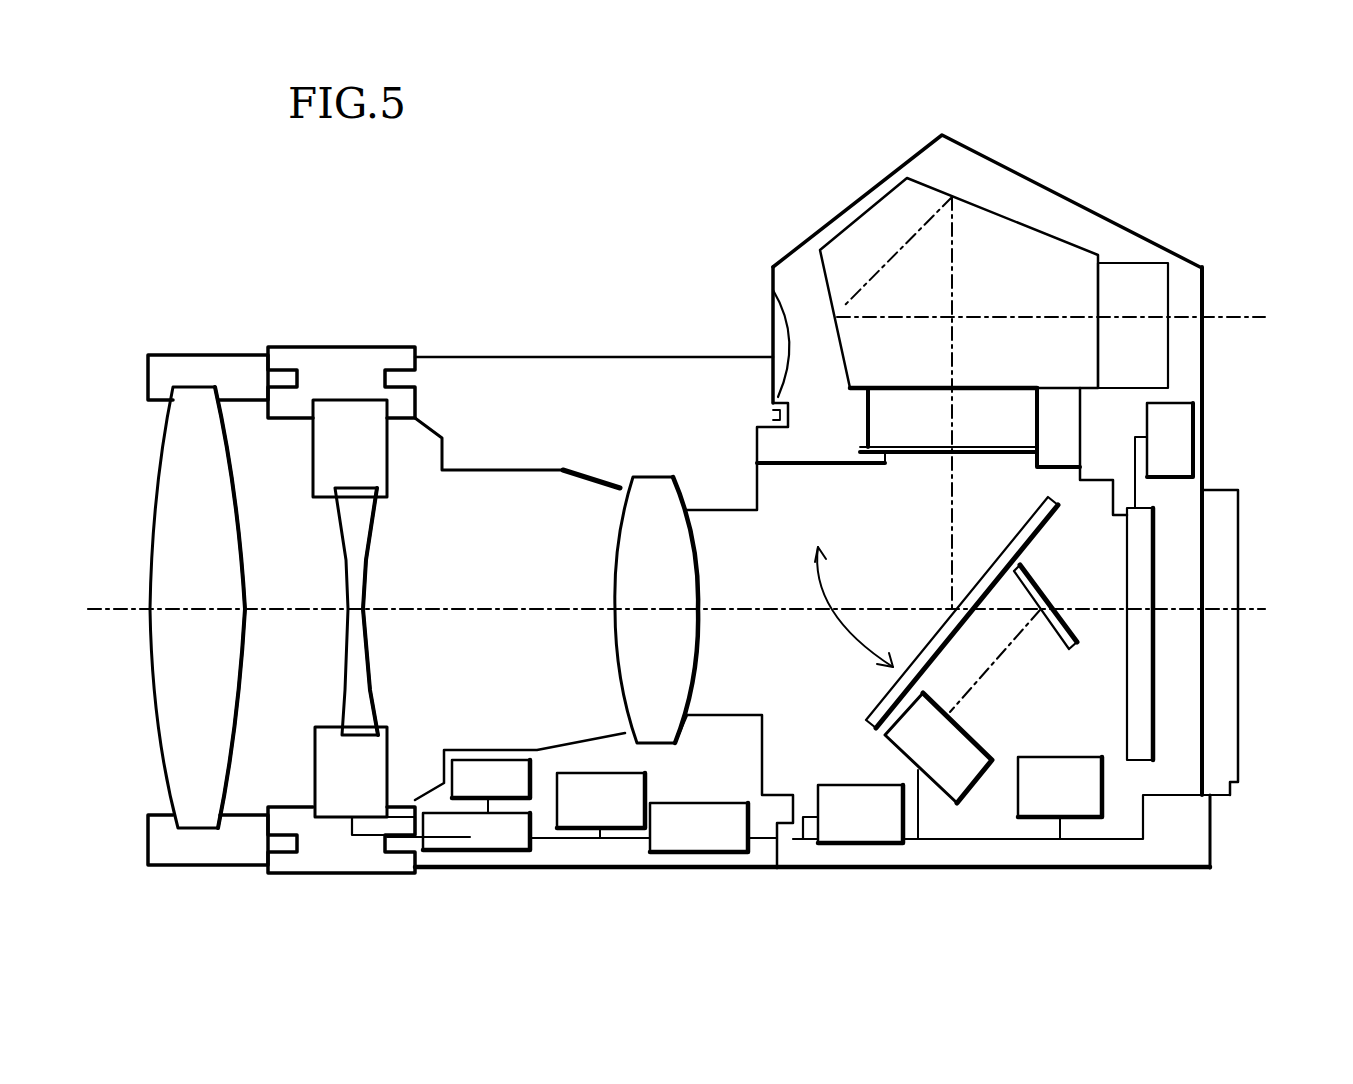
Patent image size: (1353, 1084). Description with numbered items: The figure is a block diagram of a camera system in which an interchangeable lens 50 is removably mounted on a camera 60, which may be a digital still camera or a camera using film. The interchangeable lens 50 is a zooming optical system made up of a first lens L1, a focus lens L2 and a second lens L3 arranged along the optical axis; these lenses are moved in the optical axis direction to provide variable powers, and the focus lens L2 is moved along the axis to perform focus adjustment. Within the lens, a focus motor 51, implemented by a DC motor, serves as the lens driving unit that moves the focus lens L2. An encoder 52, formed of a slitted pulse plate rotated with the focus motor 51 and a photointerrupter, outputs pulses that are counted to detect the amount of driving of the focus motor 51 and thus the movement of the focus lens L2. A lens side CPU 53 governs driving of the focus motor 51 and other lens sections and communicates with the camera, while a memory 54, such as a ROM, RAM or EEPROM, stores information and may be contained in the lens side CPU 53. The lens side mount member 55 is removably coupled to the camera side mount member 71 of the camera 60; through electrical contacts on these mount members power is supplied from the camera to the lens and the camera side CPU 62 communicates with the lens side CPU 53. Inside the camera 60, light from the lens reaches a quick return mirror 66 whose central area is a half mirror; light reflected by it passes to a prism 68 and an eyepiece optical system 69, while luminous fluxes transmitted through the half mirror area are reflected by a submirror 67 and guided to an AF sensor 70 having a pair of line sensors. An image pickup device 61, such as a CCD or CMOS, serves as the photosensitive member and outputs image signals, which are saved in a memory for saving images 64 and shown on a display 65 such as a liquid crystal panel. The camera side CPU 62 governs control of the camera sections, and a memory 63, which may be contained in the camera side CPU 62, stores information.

The first lens L1 is at (157, 672).
The focus lens L2 is at (342, 687).
The second lens L3 is at (628, 530).
The interchangeable lens 50 is at (547, 372).
The focus motor 51 is at (490, 840).
The encoder 52 is at (537, 797).
The lens side CPU 53 is at (702, 840).
The memory 54 is at (620, 813).
The lens side mount member 55 is at (785, 420).
The camera 60 is at (1097, 212).
The image pickup device 61 is at (1153, 747).
The camera side CPU 62 is at (863, 830).
The memory 63 is at (1080, 807).
The memory for saving images 64 is at (1180, 404).
The display 65 is at (1240, 690).
The quick return mirror 66 is at (1037, 517).
The submirror 67 is at (1050, 585).
The prism 68 is at (887, 208).
The eyepiece optical system 69 is at (1147, 270).
The AF sensor 70 is at (952, 807).
The camera side mount member 71 is at (773, 290).